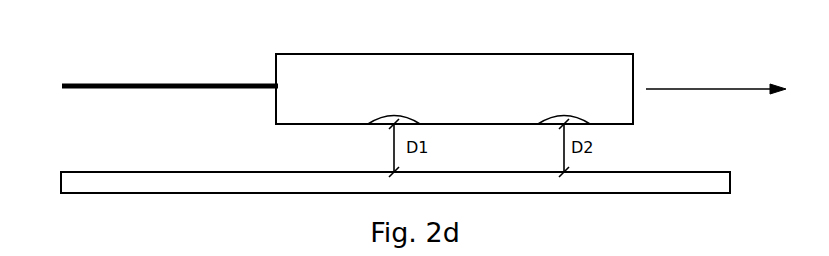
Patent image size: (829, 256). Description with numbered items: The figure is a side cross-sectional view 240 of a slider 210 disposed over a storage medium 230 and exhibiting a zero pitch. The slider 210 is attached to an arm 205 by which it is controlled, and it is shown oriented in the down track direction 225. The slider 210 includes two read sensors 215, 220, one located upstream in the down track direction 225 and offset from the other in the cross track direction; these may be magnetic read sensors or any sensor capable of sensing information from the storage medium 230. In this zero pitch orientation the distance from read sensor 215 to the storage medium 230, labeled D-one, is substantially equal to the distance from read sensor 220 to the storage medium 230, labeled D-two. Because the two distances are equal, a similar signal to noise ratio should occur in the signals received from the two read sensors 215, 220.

The arm 205 is at (153, 84).
The slider 210 is at (491, 53).
The read sensor 215 is at (394, 118).
The read sensor 220 is at (562, 118).
The down track direction 225 is at (710, 87).
The storage medium 230 is at (208, 169).
The side cross-sectional view 240 is at (215, 48).